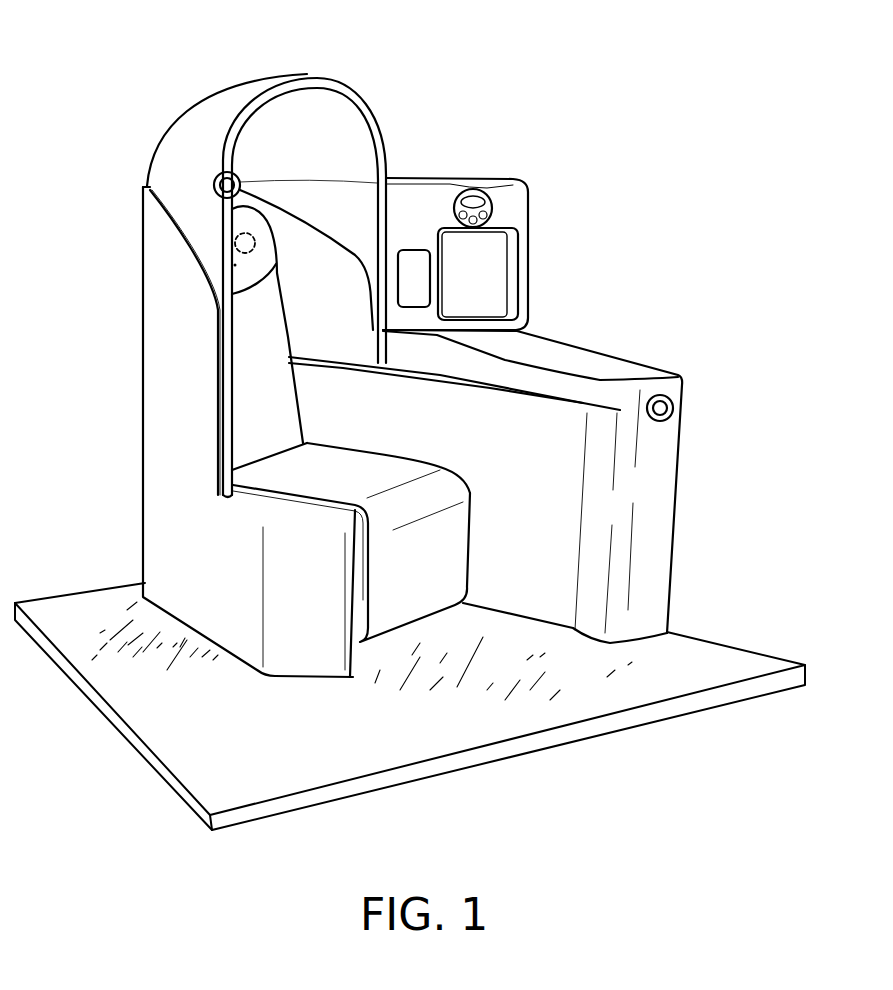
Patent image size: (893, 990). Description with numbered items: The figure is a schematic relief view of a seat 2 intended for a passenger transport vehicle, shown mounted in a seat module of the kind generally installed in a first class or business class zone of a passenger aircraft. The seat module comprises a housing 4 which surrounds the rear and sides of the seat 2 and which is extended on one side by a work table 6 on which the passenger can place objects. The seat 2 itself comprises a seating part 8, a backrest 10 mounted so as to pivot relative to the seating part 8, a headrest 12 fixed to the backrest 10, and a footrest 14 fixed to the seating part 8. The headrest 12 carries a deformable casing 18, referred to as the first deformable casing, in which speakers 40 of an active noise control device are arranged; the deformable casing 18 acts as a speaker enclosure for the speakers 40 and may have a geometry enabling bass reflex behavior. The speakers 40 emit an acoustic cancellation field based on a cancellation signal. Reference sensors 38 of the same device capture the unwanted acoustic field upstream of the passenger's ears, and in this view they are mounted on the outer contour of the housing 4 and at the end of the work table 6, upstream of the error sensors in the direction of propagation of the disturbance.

The seat 2 is at (658, 803).
The housing 4 is at (153, 266).
The work table 6 is at (598, 358).
The seating part 8 is at (297, 480).
The backrest 10 is at (250, 417).
The headrest 12 is at (157, 212).
The deformable casing 18 is at (238, 222).
The footrest 14 is at (403, 575).
The reference sensors 38 is at (218, 174).
The speakers 40 is at (247, 233).